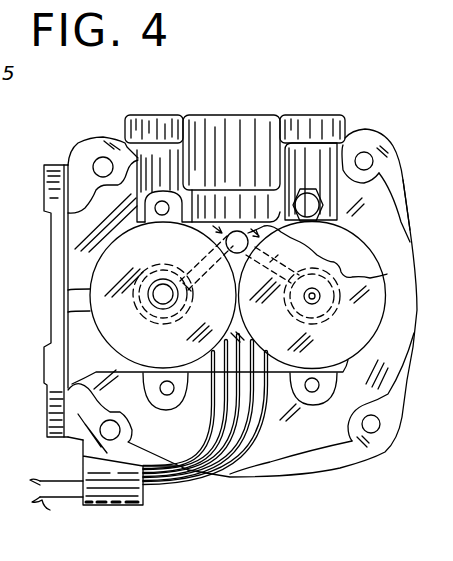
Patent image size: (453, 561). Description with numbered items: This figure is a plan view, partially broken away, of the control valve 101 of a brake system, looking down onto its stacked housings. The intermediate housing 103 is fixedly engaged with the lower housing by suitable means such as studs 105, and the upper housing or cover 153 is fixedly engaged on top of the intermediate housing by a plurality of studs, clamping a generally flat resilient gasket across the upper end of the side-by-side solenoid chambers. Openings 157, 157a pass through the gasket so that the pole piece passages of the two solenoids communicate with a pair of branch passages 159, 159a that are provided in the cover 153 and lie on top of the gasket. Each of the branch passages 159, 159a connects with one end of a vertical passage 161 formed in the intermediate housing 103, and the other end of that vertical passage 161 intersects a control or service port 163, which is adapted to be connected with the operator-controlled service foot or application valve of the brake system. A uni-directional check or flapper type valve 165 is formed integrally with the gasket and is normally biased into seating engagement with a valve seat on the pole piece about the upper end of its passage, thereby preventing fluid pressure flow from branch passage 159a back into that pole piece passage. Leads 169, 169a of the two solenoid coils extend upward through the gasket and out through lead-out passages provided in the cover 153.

The control valve 101 is at (71, 148).
The intermediate housing 103 is at (369, 195).
The studs 105 is at (363, 152).
The upper housing or cover 153 is at (346, 250).
The opening 157 is at (317, 305).
The opening 157a is at (150, 303).
The branch passage 159 is at (283, 241).
The branch passage 159a is at (197, 268).
The vertical passage 161 is at (210, 218).
The control or service port 163 is at (251, 115).
The uni-directional check or flapper type valve 165 is at (177, 298).
The lead 169 is at (266, 434).
The lead 169a is at (212, 424).